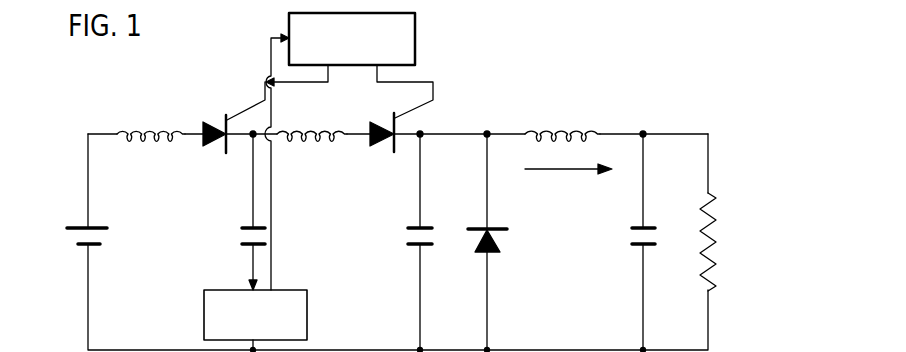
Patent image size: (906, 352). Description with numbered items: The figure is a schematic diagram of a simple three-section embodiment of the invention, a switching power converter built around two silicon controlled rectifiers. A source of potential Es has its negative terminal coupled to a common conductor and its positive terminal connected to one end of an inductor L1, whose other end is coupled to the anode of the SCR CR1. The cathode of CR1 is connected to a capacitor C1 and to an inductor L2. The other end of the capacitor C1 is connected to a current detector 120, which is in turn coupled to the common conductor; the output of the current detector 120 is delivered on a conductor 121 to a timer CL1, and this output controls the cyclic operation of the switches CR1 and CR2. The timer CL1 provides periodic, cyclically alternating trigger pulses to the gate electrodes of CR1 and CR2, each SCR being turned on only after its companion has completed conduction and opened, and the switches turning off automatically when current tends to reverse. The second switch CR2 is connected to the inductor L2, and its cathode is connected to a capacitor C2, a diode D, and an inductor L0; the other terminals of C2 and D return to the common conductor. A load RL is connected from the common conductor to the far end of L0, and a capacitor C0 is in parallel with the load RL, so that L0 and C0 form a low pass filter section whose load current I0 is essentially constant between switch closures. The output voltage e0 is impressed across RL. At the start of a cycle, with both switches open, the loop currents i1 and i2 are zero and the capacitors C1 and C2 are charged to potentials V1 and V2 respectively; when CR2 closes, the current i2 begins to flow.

The current detector 120 is at (285, 290).
The conductor 121 is at (273, 165).
The timer CL1 is at (415, 50).
The source of potential Es is at (70, 239).
The inductor L1 is at (160, 124).
The inductor L2 is at (329, 97).
The inductor L0 is at (565, 98).
The silicon controlled rectifier CR1 is at (214, 86).
The silicon controlled rectifier CR2 is at (378, 120).
The potential of capacitor C1 V1 is at (239, 160).
The potential of capacitor C2 V2 is at (405, 160).
The capacitor C1 is at (242, 238).
The capacitor C2 is at (410, 238).
The capacitor C0 is at (633, 238).
The diode D is at (472, 248).
The load RL is at (717, 247).
The output voltage e0 is at (691, 118).
The load current I0 is at (568, 190).
The current i1 is at (228, 212).
The current i2 is at (393, 208).